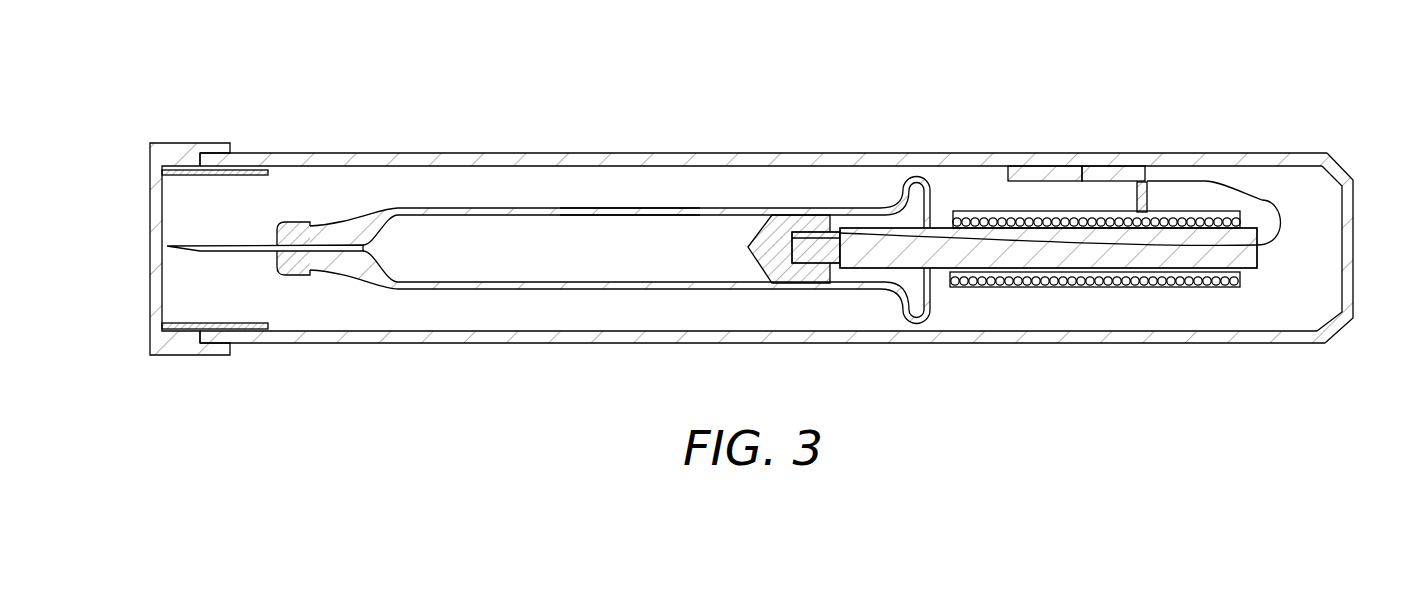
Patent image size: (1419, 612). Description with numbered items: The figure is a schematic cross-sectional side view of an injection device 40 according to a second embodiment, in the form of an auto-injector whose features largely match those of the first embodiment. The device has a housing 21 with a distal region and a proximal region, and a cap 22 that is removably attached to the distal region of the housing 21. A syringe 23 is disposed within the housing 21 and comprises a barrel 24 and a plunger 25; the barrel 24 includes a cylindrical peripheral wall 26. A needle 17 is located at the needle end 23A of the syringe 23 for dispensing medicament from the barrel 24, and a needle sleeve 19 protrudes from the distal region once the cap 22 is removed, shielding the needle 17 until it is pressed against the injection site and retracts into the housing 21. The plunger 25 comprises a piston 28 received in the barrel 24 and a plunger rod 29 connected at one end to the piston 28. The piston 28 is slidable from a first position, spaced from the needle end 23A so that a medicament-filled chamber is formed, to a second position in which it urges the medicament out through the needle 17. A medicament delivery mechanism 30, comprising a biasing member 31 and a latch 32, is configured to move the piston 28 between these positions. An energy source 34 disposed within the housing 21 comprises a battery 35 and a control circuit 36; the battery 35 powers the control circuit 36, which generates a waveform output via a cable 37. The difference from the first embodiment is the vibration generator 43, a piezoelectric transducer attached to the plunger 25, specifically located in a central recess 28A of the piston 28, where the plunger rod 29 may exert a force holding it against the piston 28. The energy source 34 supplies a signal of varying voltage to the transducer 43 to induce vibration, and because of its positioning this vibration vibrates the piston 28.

The injection device 40 is at (180, 78).
The needle 17 is at (232, 245).
The needle sleeve 19 is at (213, 327).
The housing 21 is at (1353, 248).
The cap 22 is at (150, 250).
The syringe 23 is at (503, 290).
The needle end 23A is at (365, 275).
The barrel 24 is at (680, 290).
The plunger 25 is at (872, 186).
The peripheral wall 26 is at (603, 207).
The piston 28 is at (775, 264).
The central recess 28A is at (832, 264).
The plunger rod 29 is at (1028, 256).
The medicament delivery mechanism 30 is at (1177, 133).
The biasing member 31 is at (1178, 288).
The latch 32 is at (1135, 196).
The energy source 34 is at (1078, 124).
The battery 35 is at (1030, 172).
The control circuit 36 is at (1120, 172).
The cable 37 is at (1240, 190).
The vibration generator 43 is at (803, 232).